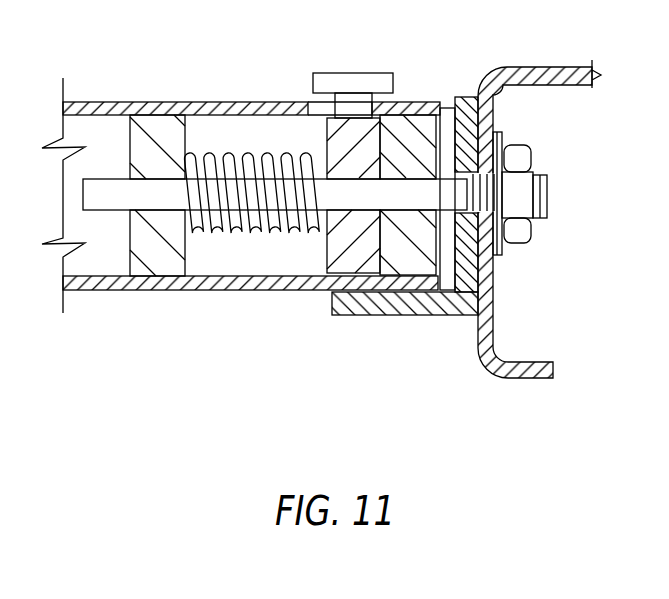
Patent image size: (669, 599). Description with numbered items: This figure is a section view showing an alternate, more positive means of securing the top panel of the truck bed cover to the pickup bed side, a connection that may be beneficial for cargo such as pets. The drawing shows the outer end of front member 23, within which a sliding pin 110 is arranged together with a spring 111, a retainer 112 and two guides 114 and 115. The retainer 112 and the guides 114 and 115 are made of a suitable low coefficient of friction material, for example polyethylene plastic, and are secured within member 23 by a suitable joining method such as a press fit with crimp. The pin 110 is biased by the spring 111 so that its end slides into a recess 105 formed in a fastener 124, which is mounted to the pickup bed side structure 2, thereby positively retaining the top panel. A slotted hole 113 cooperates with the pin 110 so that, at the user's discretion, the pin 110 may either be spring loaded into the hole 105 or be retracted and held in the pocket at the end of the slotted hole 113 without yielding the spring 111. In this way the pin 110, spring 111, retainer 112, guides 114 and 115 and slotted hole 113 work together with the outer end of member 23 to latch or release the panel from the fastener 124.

The base plate 2 is at (428, 312).
The front member 23 is at (117, 102).
The recess 105 is at (485, 253).
The pin 110 is at (97, 193).
The spring 111 is at (235, 237).
The retainer 112 is at (343, 267).
The slotted hole 113 is at (318, 108).
The guide 114 is at (147, 120).
The guide 115 is at (395, 127).
The fastener 124 is at (548, 186).